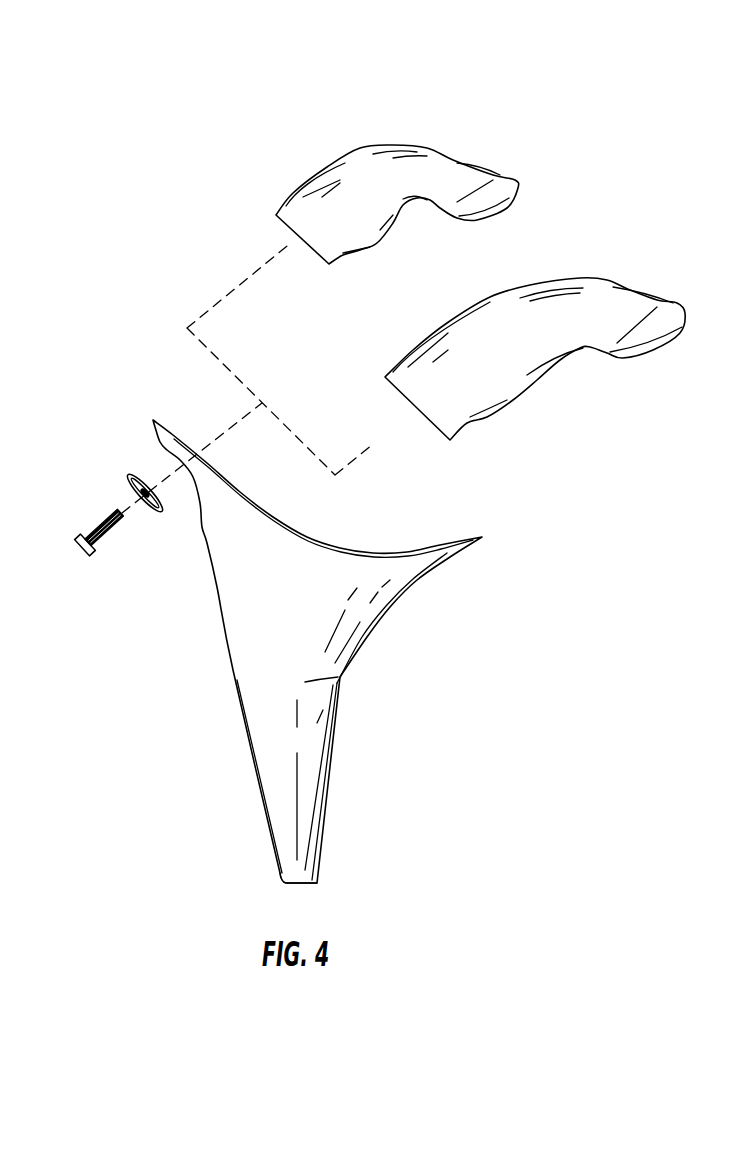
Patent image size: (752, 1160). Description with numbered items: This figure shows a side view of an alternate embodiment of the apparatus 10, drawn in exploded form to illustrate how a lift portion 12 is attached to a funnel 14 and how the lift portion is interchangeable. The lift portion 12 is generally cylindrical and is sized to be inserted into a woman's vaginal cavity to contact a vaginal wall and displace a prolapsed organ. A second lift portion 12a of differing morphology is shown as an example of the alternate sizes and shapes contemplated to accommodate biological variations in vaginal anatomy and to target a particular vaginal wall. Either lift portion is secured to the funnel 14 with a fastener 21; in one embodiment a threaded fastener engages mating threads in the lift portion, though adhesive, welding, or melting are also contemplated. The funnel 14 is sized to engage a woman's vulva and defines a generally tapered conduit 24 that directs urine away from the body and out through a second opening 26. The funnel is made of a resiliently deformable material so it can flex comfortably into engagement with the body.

The apparatus 10 is at (138, 74).
The lift portion 12 is at (375, 133).
The lift portion of varying morphology 12a is at (507, 409).
The funnel 14 is at (231, 707).
The fastener 21 is at (80, 549).
The conduit 24 is at (315, 737).
The second opening 26 is at (298, 885).